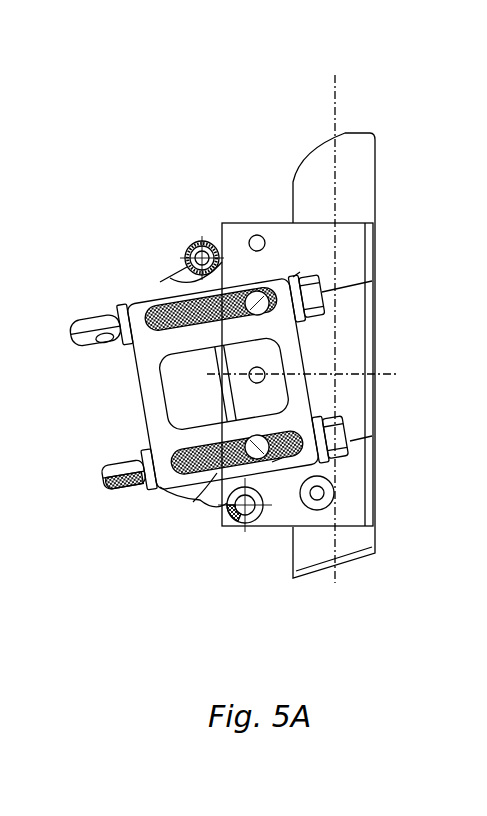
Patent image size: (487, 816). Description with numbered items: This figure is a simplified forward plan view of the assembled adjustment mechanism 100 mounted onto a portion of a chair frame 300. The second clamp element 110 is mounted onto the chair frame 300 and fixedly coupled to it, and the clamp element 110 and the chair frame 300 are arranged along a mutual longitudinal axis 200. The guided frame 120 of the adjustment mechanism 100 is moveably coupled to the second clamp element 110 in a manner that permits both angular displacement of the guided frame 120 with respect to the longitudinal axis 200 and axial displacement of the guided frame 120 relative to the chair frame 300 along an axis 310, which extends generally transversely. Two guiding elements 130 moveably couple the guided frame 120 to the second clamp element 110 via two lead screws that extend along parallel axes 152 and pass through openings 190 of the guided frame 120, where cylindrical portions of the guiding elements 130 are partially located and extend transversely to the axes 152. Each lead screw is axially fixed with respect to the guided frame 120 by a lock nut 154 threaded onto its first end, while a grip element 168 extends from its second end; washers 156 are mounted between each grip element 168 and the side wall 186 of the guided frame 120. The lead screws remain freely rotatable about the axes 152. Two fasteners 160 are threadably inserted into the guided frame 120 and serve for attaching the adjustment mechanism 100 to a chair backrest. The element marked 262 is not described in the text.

The adjustment mechanism 100 is at (292, 148).
The second clamp element 110 is at (287, 240).
The guided frame 120 is at (136, 291).
The guiding element 130 is at (293, 277).
The axis 152 is at (322, 292).
The lock nut 154 is at (318, 288).
The washer 156 is at (128, 344).
The fastener 160 is at (200, 240).
The grip element 168 is at (84, 316).
The side wall 186 is at (147, 419).
The opening 190 is at (157, 280).
The longitudinal axis 200 is at (336, 95).
The pin 262 is at (253, 292).
The chair frame 300 is at (360, 160).
The axis 310 is at (388, 373).